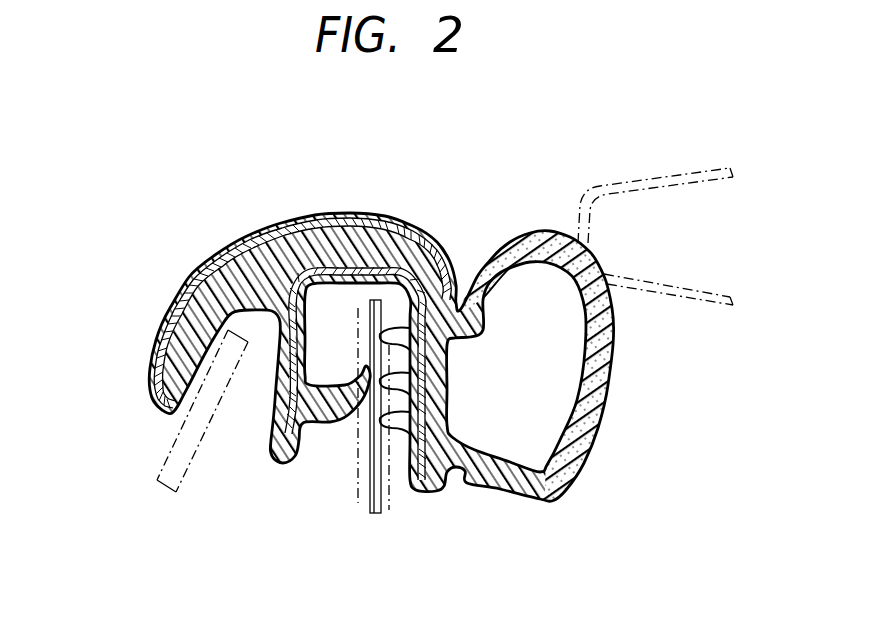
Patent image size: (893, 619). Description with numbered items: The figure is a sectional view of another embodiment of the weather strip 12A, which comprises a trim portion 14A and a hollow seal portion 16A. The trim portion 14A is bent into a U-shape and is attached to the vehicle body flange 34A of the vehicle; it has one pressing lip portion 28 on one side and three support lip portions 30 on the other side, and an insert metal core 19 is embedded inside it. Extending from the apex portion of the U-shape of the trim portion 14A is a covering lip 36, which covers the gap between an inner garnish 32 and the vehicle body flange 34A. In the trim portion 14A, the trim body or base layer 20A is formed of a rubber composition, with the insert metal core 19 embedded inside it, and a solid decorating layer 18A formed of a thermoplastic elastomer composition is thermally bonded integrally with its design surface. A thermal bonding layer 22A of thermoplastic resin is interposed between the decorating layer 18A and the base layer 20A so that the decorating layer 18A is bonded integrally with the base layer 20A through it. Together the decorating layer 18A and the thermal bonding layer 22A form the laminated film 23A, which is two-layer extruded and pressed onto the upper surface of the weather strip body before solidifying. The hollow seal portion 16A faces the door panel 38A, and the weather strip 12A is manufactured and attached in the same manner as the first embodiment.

The weather strip 12A is at (531, 205).
The trim portion 14A is at (381, 303).
The hollow seal portion 16A is at (609, 387).
The decorating layer 18A is at (255, 230).
The insert metal core 19 is at (460, 481).
The base layer 20A is at (268, 437).
The thermal bonding layer 22A is at (314, 214).
The laminated film 23A is at (358, 121).
The pressing lip portion 28 is at (340, 402).
The support lip portions 30 is at (396, 428).
The inner garnish 32 is at (162, 455).
The vehicle body flange 34A is at (358, 470).
The covering lip 36 is at (194, 284).
The door panel 38A is at (652, 182).